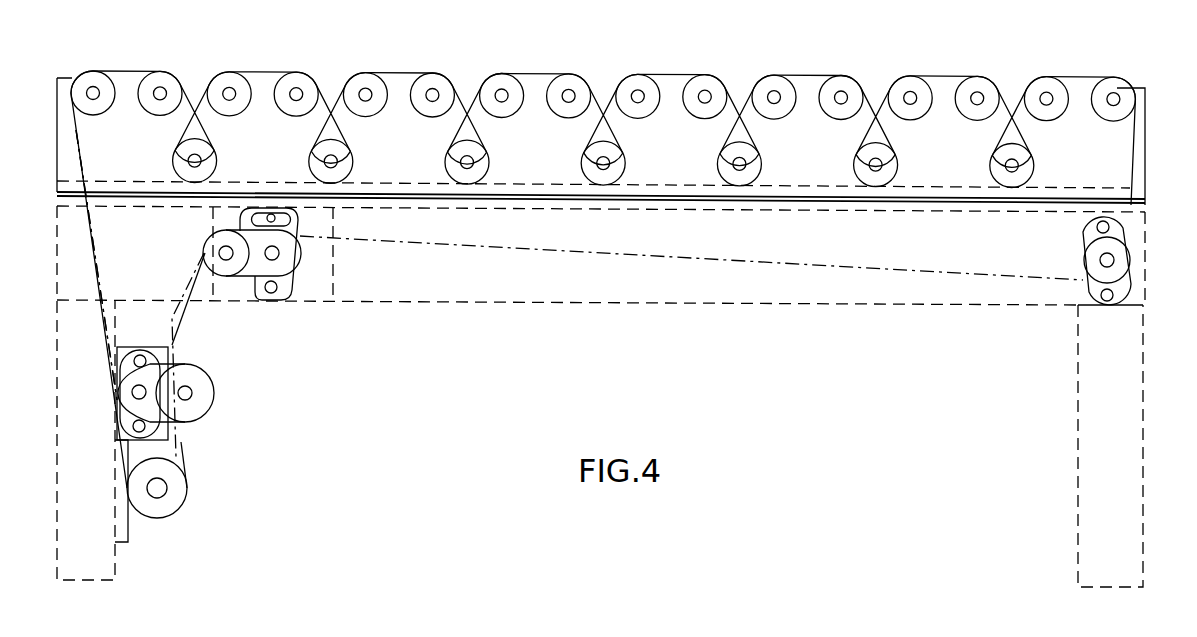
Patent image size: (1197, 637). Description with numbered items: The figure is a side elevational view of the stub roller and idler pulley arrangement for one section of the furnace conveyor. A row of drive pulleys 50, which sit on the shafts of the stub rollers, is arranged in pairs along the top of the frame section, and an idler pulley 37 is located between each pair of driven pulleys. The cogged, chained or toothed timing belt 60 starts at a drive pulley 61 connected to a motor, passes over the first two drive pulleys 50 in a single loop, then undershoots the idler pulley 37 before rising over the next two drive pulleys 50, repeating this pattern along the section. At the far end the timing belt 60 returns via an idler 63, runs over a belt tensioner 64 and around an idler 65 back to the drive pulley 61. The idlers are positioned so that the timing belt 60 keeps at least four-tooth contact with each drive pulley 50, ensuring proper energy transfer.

The drive pulleys 50 is at (158, 76).
The idler pulleys 37 is at (310, 163).
The timing belt 60 is at (96, 253).
The drive pulley 61 is at (176, 498).
The idler 63 is at (1120, 268).
The belt tensioner 64 is at (245, 277).
The idler 65 is at (198, 410).